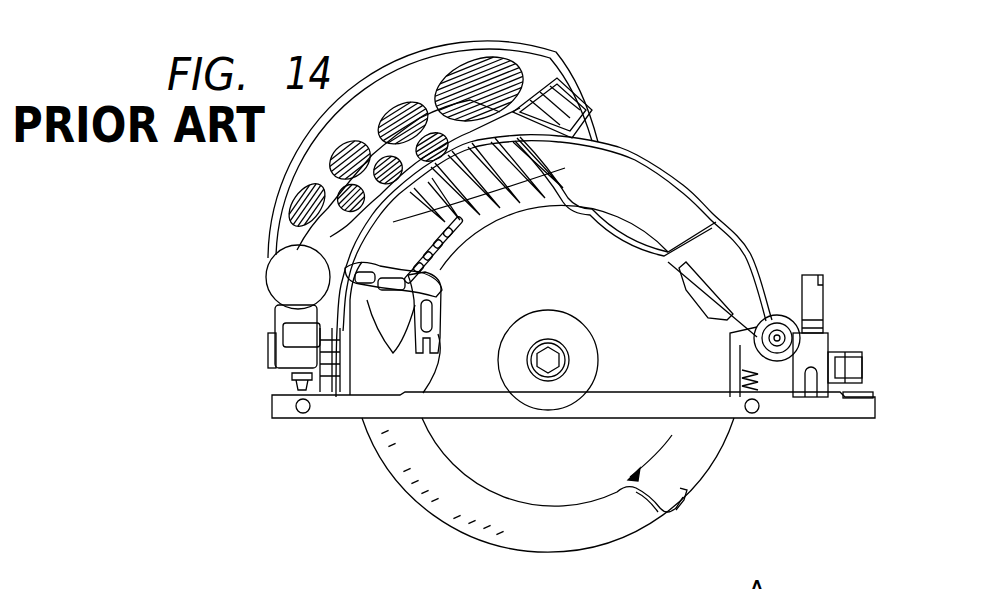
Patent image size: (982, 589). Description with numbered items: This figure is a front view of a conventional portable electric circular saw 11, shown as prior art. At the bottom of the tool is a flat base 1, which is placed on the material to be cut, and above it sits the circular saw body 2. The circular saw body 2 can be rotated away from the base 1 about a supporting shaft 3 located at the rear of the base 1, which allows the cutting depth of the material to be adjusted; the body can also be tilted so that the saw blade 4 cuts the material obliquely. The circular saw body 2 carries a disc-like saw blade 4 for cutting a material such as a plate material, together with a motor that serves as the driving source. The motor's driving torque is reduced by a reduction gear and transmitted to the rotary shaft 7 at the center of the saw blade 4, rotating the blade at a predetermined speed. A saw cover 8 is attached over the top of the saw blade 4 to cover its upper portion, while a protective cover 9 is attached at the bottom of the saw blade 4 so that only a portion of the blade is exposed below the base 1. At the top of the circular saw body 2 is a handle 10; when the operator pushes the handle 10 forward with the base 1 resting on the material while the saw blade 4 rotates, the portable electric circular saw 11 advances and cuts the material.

The base 1 is at (276, 403).
The circular saw body 2 is at (612, 100).
The supporting shaft 3 is at (814, 332).
The saw blade 4 is at (695, 450).
The rotary shaft 7 is at (556, 352).
The saw cover 8 is at (667, 197).
The protective cover 9 is at (622, 528).
The handle 10 is at (520, 52).
The portable electric circular saw 11 is at (757, 82).